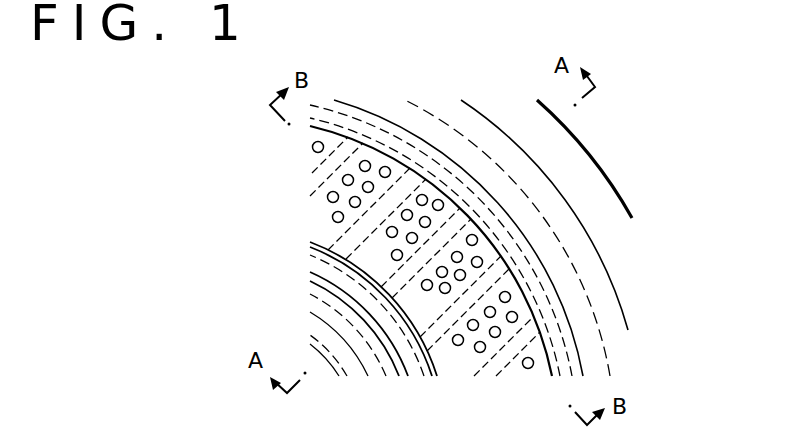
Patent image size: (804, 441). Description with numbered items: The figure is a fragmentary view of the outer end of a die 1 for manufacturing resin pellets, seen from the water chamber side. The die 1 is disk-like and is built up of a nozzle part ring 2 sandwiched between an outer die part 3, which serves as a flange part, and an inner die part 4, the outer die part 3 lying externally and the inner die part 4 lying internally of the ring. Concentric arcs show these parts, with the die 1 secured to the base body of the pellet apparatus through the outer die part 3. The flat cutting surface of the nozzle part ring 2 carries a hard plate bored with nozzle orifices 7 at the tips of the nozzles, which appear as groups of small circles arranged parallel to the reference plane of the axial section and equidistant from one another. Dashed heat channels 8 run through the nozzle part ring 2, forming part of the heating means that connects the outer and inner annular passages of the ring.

The die 1 is at (605, 159).
The nozzle part ring 2 is at (427, 185).
The outer die part 3 is at (575, 295).
The inner die part 4 is at (330, 308).
The nozzle orifices 7 is at (333, 216).
The heat channels 8 is at (347, 233).